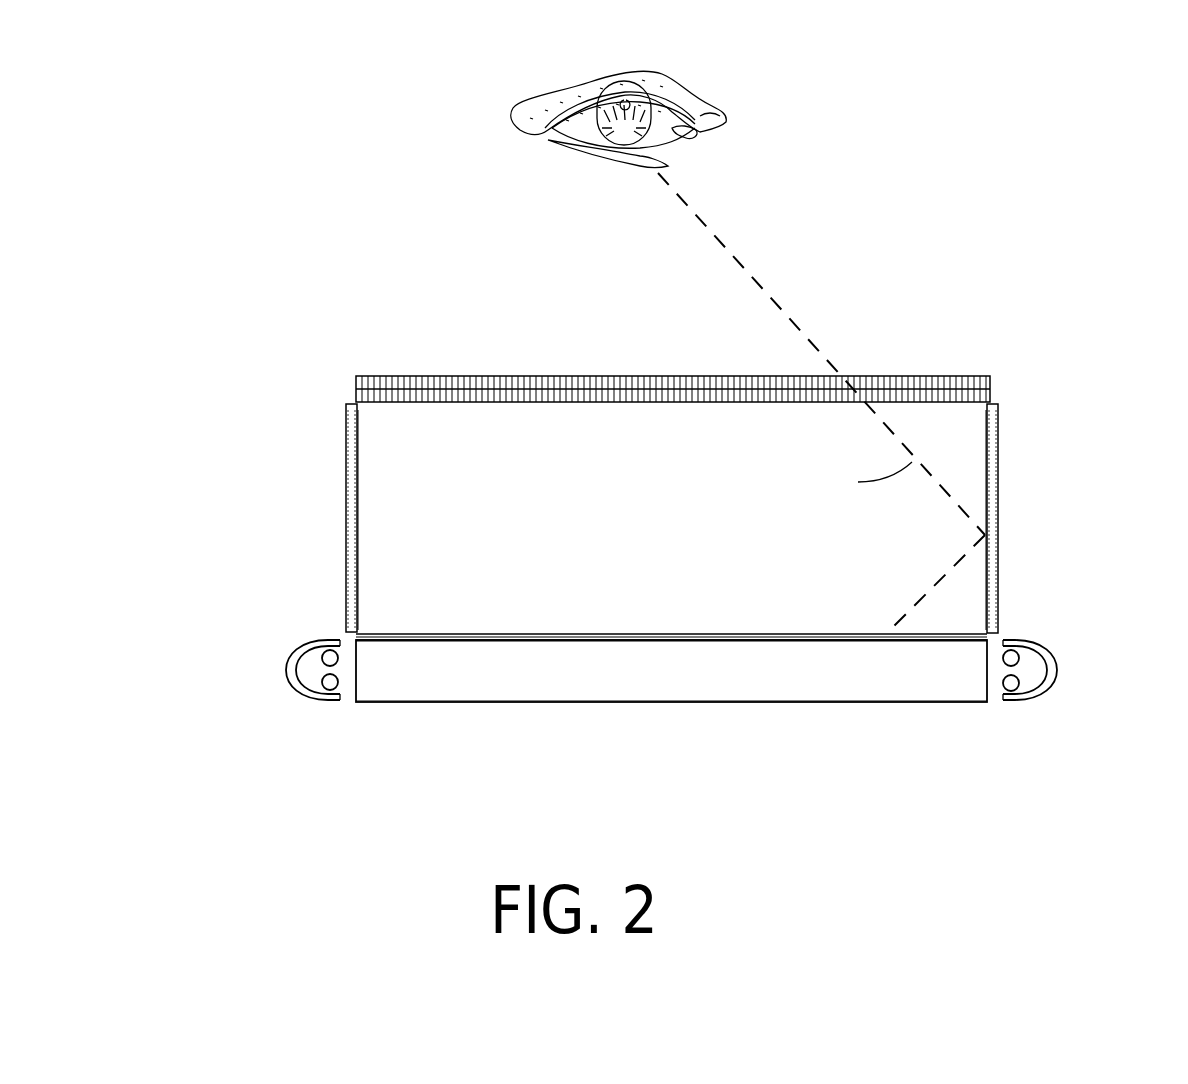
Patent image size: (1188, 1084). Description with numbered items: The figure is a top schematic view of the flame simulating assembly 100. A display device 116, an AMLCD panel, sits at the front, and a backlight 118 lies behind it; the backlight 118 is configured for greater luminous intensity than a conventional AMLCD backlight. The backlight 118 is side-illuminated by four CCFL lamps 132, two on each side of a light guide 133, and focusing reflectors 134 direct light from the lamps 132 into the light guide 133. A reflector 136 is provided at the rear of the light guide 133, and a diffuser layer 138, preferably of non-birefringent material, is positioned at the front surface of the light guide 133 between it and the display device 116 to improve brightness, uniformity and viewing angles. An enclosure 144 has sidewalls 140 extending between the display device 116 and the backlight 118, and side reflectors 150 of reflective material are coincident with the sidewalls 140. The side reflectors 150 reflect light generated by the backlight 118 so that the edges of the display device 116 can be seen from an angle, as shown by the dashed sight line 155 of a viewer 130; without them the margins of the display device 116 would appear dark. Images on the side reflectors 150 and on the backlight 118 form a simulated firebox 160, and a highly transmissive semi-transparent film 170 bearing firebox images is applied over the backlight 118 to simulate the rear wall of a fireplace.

The flame simulating assembly 100 is at (310, 331).
The viewer 130 is at (590, 128).
The sight line 155 is at (785, 316).
The simulated firebox 160 is at (950, 467).
The display device 116 is at (908, 394).
The sidewalls 140 is at (346, 515).
The enclosure 144 is at (1017, 538).
The side reflectors 150 is at (358, 476).
The diffuser layer 138 is at (550, 640).
The semi-transparent film 170 is at (415, 634).
The reflector 136 is at (722, 702).
The light guide 133 is at (458, 680).
The backlight 118 is at (582, 712).
The focusing reflectors 134 is at (288, 672).
The CCFL lamps 132 is at (324, 652).